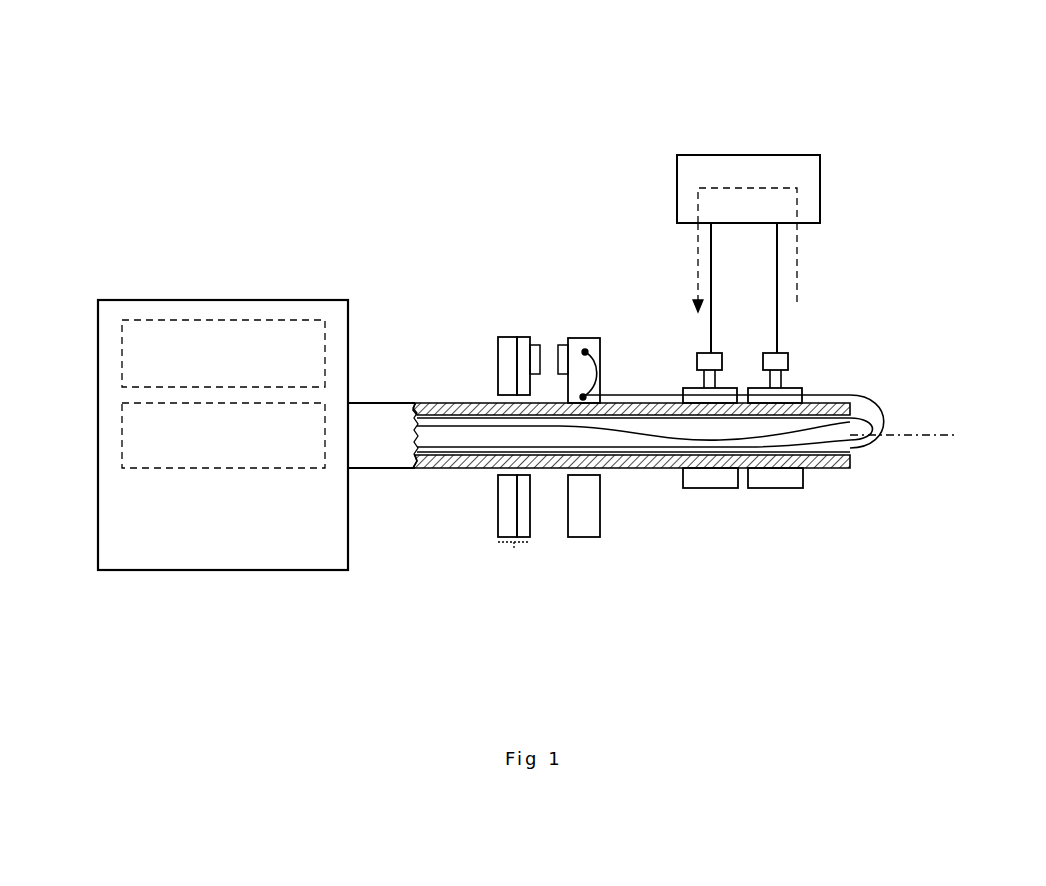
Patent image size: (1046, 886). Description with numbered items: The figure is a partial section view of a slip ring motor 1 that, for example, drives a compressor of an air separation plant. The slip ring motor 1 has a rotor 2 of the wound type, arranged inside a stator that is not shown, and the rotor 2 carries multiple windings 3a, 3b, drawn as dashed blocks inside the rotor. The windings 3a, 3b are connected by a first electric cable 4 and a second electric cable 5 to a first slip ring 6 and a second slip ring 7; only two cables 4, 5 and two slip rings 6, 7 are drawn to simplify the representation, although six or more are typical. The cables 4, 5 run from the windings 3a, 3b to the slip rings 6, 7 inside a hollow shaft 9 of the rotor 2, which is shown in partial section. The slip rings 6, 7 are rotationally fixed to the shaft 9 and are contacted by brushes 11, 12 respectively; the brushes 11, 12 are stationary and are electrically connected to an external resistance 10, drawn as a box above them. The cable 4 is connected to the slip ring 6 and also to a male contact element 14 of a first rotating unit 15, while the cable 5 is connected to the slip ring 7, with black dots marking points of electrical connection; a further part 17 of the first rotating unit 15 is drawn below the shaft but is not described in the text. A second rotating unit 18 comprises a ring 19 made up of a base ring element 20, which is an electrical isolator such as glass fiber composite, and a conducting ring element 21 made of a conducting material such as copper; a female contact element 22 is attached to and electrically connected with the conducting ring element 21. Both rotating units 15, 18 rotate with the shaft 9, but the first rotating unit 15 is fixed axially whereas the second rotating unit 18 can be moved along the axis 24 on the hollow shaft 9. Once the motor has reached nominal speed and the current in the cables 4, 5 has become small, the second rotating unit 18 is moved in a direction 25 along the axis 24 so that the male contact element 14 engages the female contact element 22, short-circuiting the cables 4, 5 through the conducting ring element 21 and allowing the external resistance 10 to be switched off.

The slip ring motor 1 is at (252, 78).
The rotor 2 is at (181, 575).
The winding 3a is at (143, 352).
The winding 3b is at (143, 432).
The first electric cable 4 is at (428, 472).
The second electric cable 5 is at (439, 403).
The first slip ring 6 is at (782, 480).
The second slip ring 7 is at (719, 479).
The hollow shaft 9 is at (376, 412).
The external resistance 10 is at (716, 172).
The brush 11 is at (788, 355).
The brush 12 is at (716, 354).
The male contact element 14 is at (561, 345).
The first rotating unit 15 is at (595, 318).
The second coil winding 17 is at (590, 517).
The second rotating unit 18 is at (484, 310).
The ring 19 is at (514, 560).
The base ring element 20 is at (508, 515).
The conducting ring element 21 is at (522, 525).
The female contact element 22 is at (545, 345).
The axis 24 is at (908, 447).
The direction 25 is at (538, 291).